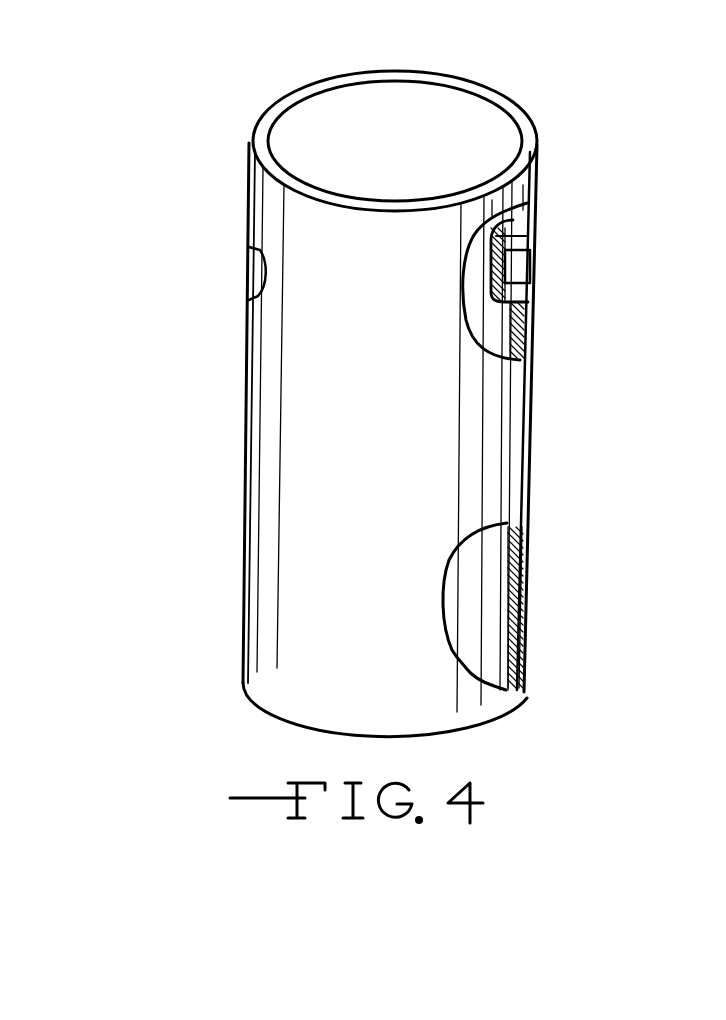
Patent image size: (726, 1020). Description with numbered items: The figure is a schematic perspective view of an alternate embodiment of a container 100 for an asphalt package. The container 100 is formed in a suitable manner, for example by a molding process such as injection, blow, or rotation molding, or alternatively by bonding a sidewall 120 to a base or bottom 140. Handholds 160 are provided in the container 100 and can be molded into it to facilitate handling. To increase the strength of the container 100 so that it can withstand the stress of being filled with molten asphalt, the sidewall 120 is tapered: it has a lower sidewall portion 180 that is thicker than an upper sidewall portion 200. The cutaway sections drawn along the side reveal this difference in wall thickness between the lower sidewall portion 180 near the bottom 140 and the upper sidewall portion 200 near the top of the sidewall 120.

The container 100 is at (258, 95).
The sidewall 120 is at (246, 425).
The bottom 140 is at (522, 690).
The handholds 160 is at (258, 270).
The lower sidewall portion 180 is at (527, 578).
The upper sidewall portion 200 is at (535, 325).